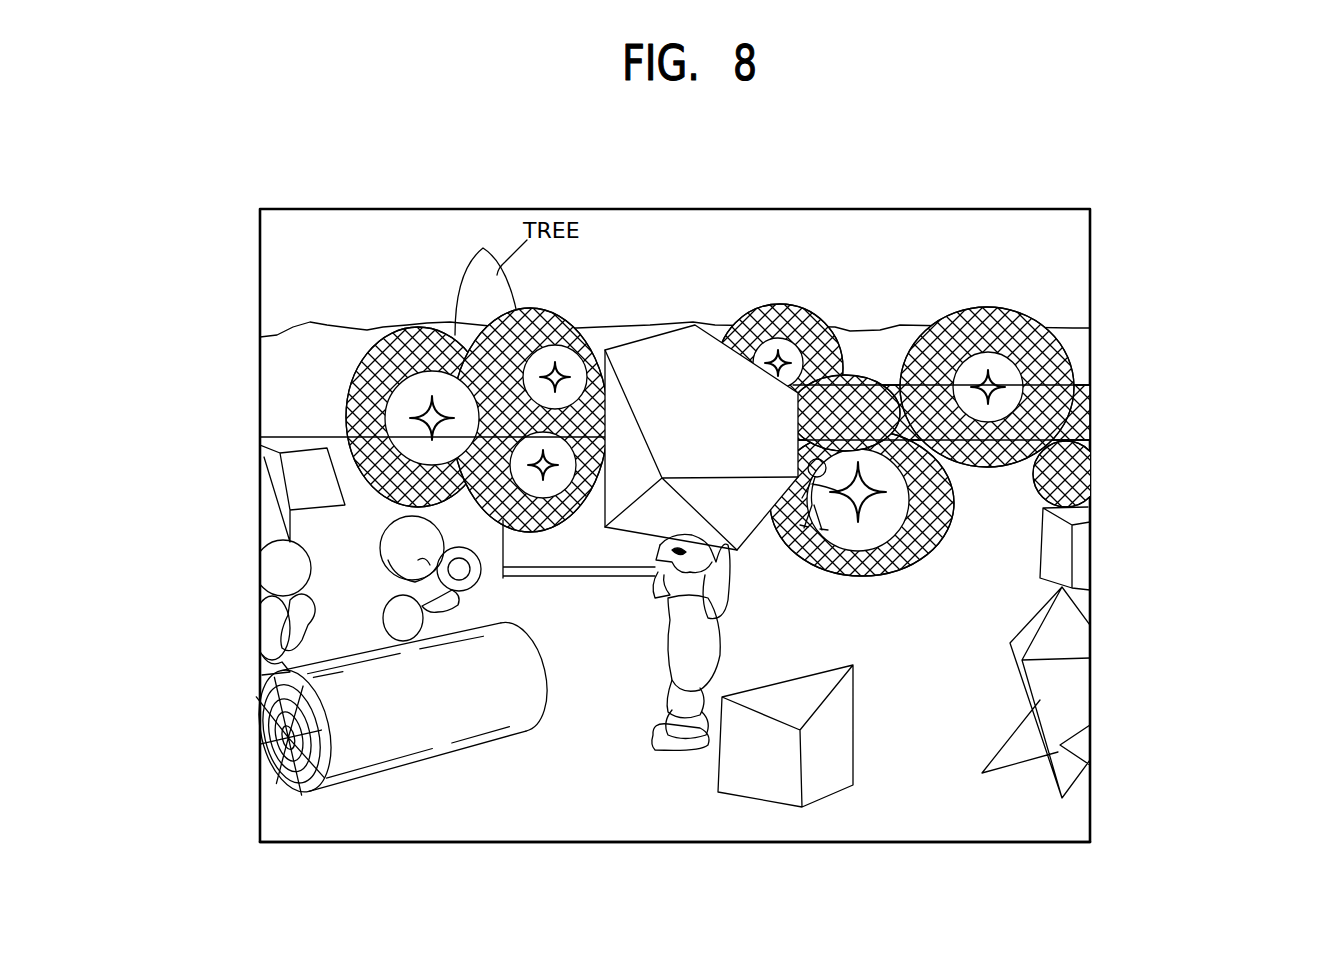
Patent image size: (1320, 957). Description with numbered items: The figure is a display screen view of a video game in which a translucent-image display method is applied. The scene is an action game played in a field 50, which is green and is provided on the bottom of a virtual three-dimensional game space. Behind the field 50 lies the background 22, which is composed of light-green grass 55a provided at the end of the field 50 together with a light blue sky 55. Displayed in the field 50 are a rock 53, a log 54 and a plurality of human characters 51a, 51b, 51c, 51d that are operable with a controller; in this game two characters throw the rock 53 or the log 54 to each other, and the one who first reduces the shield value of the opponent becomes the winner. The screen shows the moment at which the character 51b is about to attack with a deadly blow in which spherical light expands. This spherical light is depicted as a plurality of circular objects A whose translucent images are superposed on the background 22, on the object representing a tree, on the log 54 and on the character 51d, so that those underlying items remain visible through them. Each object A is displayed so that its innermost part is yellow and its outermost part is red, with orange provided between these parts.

The background 22 is at (963, 208).
The sky 55 is at (1080, 245).
The grass 55a is at (272, 383).
The rock 53 is at (687, 333).
The log 54 is at (867, 393).
The character 51a is at (720, 687).
The character 51b is at (392, 562).
The character 51c is at (270, 575).
The character 51d is at (783, 533).
The field 50 is at (958, 828).
The circular object A is at (392, 328).